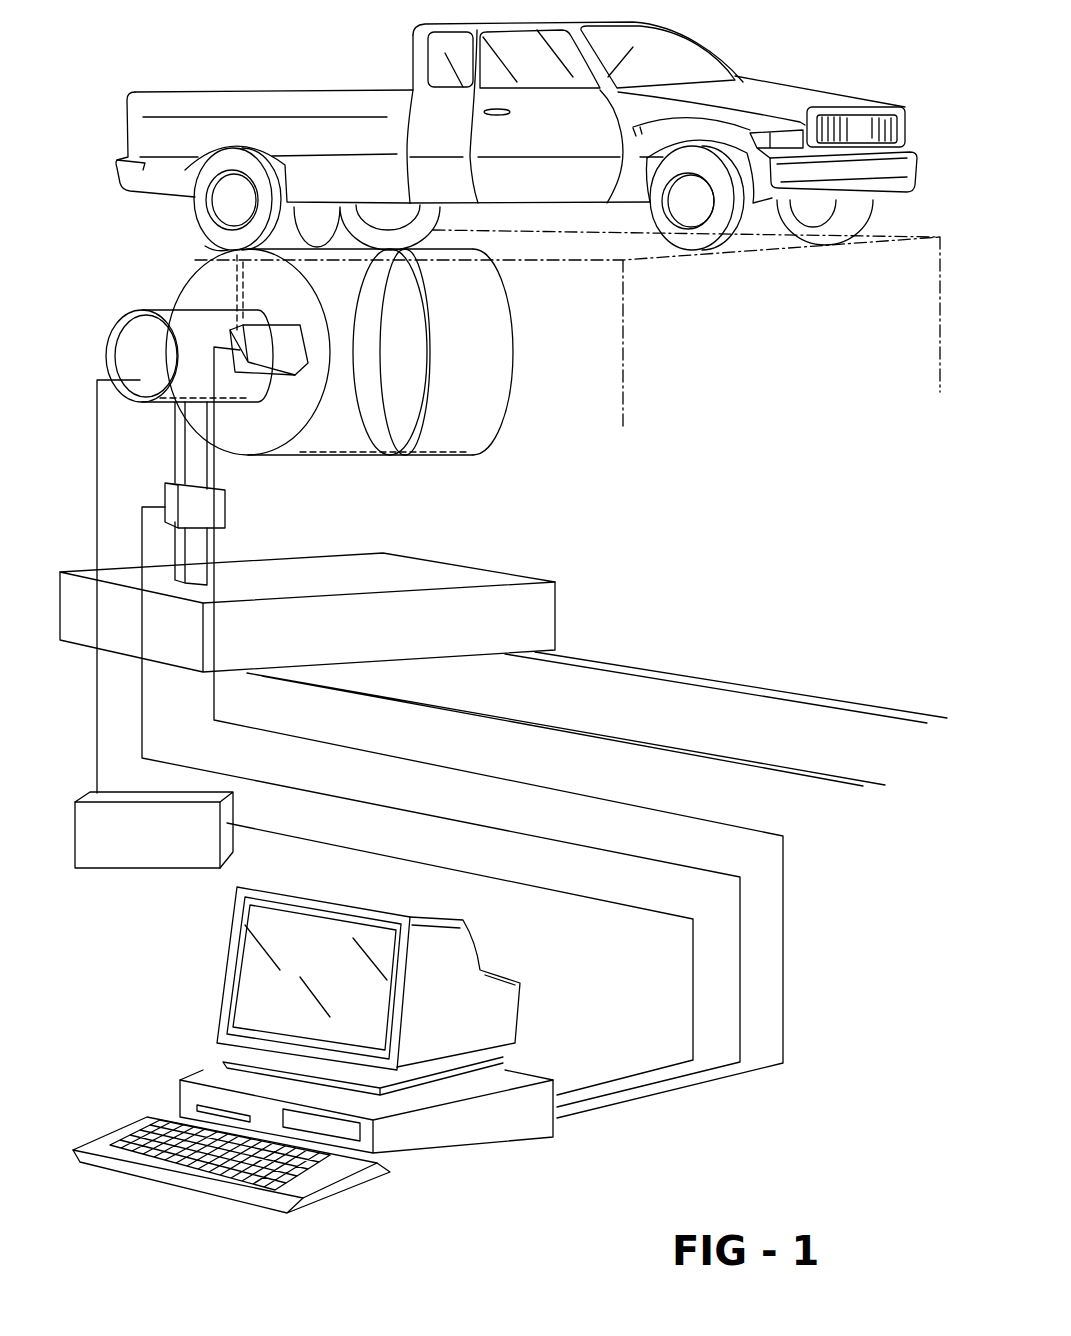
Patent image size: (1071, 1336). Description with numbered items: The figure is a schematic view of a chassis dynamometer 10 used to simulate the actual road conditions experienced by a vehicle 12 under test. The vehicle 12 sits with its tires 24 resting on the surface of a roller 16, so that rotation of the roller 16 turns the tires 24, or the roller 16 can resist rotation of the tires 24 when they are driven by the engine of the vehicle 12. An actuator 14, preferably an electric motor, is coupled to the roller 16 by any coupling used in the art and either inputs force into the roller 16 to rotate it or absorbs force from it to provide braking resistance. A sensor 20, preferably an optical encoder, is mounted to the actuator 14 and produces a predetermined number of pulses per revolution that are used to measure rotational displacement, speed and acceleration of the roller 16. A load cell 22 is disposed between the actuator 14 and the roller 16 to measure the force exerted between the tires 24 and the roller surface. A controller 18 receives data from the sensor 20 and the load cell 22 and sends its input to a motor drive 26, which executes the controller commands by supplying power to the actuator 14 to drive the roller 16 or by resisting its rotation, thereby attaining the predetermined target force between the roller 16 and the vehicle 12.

The chassis dynamometer 10 is at (706, 496).
The vehicle 12 is at (783, 93).
The actuator 14 is at (148, 345).
The roller 16 is at (480, 413).
The controller 18 is at (442, 1132).
The sensor 20 is at (293, 343).
The load cell 22 is at (222, 512).
The vehicle tires 24 is at (200, 222).
The motor drive 26 is at (145, 868).